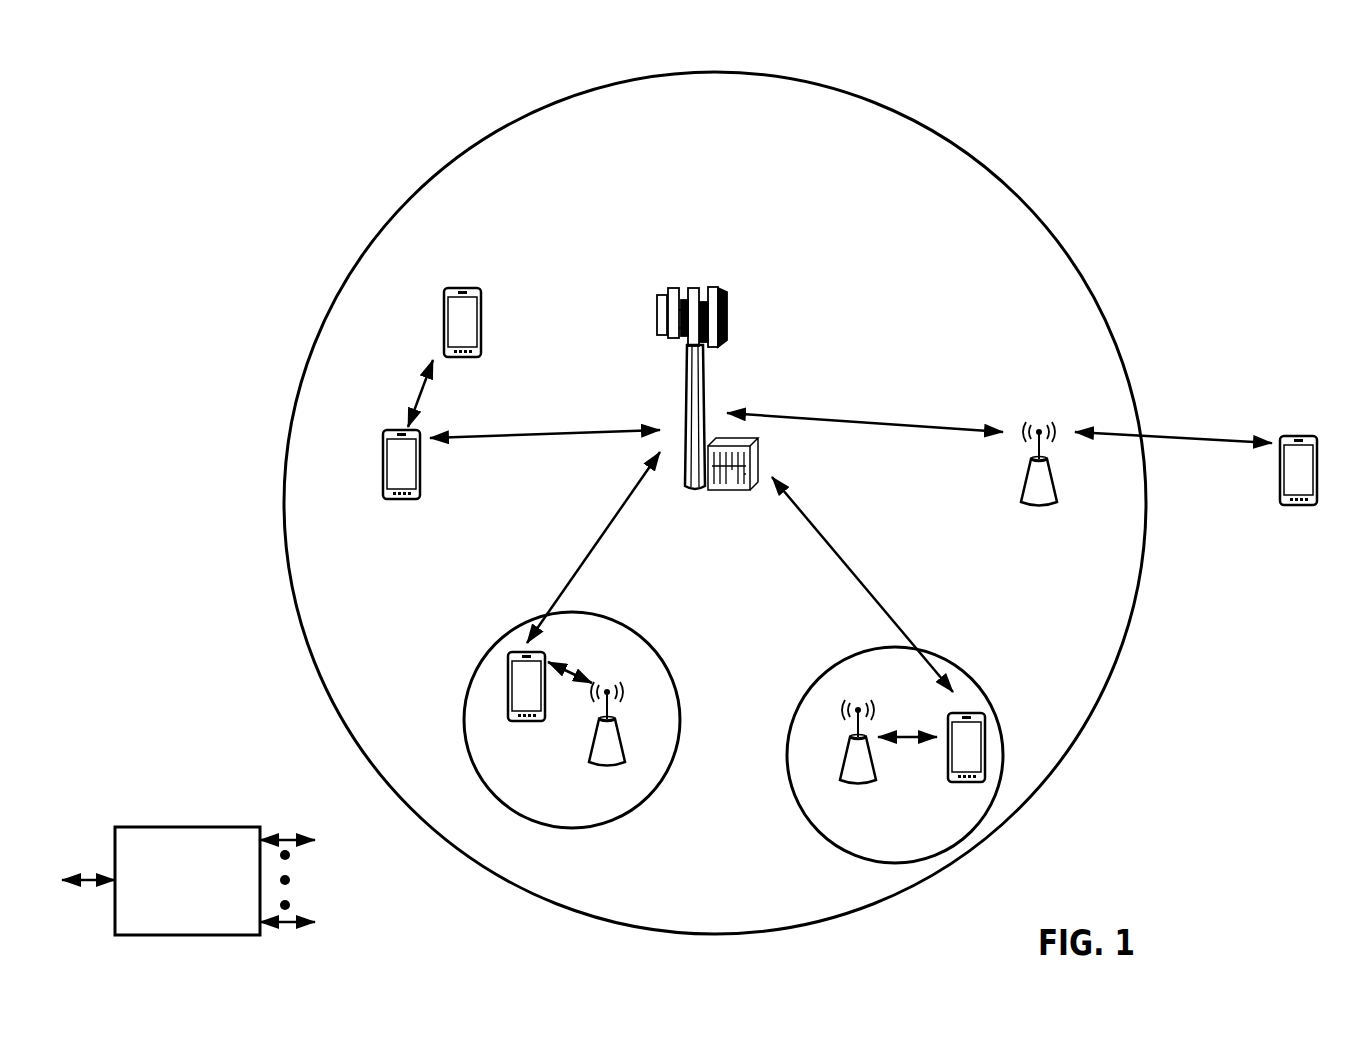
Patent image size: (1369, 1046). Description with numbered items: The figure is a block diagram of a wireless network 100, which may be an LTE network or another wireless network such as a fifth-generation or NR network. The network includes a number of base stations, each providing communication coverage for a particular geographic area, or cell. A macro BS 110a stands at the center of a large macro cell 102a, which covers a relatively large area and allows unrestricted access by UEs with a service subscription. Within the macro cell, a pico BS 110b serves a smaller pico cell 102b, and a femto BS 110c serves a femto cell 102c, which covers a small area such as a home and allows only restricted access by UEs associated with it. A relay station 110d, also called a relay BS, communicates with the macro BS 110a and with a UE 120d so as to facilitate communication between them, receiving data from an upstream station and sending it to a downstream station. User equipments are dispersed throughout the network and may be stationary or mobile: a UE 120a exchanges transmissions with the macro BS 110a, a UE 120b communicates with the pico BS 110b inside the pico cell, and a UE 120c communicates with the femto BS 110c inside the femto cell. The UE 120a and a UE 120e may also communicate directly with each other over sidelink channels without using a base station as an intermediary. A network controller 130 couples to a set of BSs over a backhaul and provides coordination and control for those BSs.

The wireless network 100 is at (172, 67).
The macro cell 102a is at (1000, 177).
The pico cell 102b is at (664, 660).
The femto cell 102c is at (832, 666).
The macro BS 110a is at (700, 282).
The pico BS 110b is at (626, 750).
The femto BS 110c is at (845, 770).
The relay station 110d is at (1040, 420).
The UE 120a is at (383, 460).
The UE 120b is at (515, 722).
The UE 120c is at (953, 784).
The UE 120d is at (1310, 434).
The UE 120e is at (445, 310).
The network controller 130 is at (185, 826).